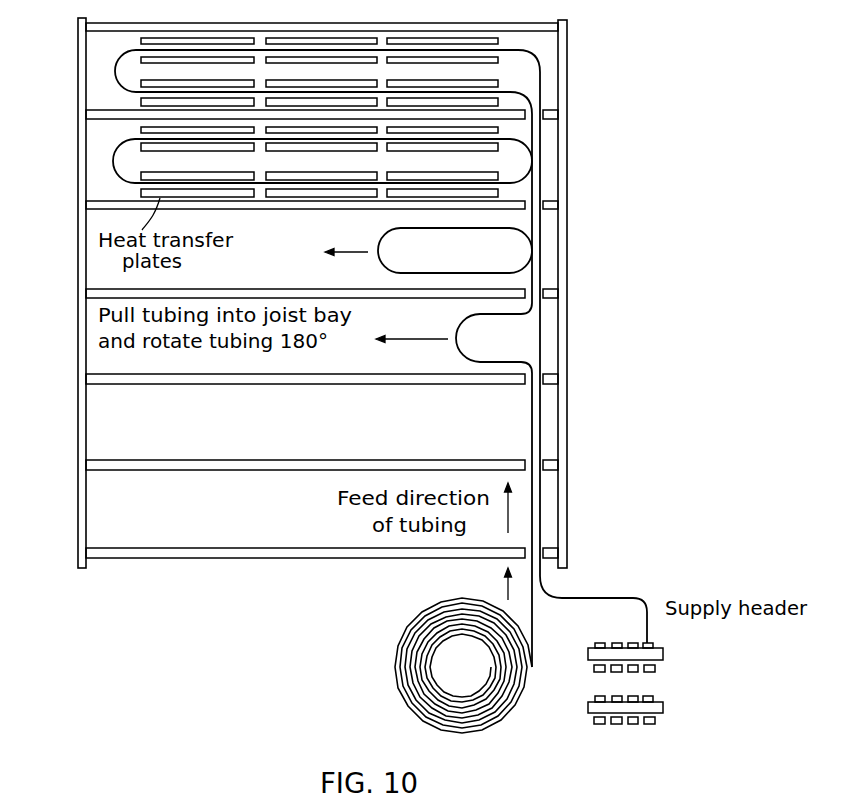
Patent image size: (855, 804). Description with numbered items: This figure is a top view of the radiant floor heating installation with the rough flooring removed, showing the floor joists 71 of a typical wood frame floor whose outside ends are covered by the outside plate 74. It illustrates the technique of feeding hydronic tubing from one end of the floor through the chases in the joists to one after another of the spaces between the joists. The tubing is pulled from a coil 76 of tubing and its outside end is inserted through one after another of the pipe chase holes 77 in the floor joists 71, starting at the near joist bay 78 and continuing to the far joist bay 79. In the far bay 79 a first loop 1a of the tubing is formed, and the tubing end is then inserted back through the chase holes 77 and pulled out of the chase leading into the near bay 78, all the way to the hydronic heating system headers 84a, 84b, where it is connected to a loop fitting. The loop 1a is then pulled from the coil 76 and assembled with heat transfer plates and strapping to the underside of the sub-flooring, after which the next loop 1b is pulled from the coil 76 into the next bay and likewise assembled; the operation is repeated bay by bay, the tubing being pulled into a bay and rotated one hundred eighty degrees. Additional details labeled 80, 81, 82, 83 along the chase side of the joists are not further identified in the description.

The tubing loop 1a is at (118, 66).
The next tubing loop 1b is at (115, 144).
The floor joists 71 is at (302, 212).
The outside plate 74 is at (567, 240).
The coil of tubing 76 is at (382, 654).
The pipe chase holes 77 is at (550, 394).
The near joist bay 78 is at (148, 525).
The far joist bay 79 is at (546, 48).
The pipe chase section 80 is at (548, 181).
The pipe chase section 81 is at (540, 274).
The pipe chase section 82 is at (548, 338).
The pipe chase section 83 is at (540, 442).
The hydronic heating system header 84a is at (663, 655).
The hydronic heating system header 84b is at (663, 708).